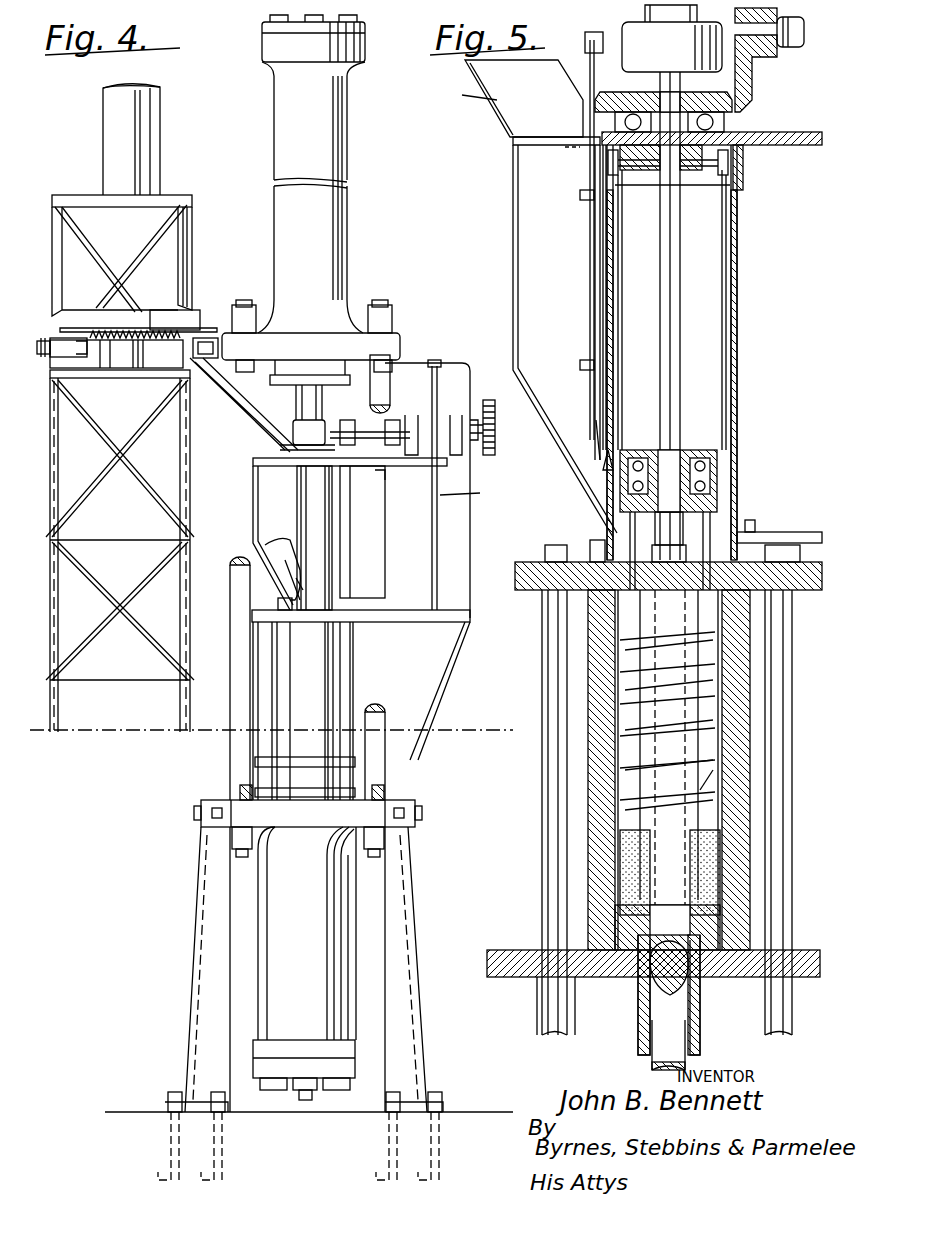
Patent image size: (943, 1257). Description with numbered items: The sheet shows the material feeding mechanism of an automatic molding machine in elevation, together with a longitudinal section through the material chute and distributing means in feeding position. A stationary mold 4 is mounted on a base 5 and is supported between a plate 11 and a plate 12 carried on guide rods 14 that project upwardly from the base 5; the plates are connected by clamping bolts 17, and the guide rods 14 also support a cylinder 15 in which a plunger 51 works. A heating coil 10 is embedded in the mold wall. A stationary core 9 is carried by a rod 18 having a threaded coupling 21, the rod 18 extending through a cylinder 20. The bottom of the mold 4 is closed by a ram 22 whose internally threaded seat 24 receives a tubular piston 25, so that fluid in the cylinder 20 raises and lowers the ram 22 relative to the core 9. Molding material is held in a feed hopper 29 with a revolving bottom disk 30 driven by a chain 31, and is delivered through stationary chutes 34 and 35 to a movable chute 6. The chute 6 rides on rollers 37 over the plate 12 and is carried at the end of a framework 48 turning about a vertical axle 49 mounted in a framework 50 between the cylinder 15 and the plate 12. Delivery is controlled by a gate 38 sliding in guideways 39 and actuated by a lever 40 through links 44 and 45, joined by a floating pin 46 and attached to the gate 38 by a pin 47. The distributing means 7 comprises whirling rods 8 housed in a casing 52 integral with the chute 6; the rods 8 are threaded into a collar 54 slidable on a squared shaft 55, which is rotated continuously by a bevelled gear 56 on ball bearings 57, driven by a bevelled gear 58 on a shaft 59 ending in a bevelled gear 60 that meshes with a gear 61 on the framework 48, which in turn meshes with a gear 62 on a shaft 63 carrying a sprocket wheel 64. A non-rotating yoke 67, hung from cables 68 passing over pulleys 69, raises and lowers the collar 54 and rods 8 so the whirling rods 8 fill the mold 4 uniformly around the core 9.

In FIG. 4, the stationary mold 4 is at (323, 668).
In FIG. 5, the stationary mold 4 is at (603, 748).
In FIG. 4, the base 5 is at (399, 879).
In FIG. 4, the movable chute 6 is at (267, 503).
In FIG. 5, the movable chute 6 is at (528, 263).
In FIG. 5, the distributing means 7 is at (713, 770).
In FIG. 4, the whirling rods 8 is at (300, 575).
In FIG. 5, the whirling rods 8 is at (703, 792).
In FIG. 5, the core 9 is at (657, 682).
In FIG. 5, the heating coil 10 is at (588, 708).
In FIG. 4, the plate 11 is at (315, 757).
In FIG. 5, the plate 11 is at (646, 992).
In FIG. 4, the plate 12 is at (357, 617).
In FIG. 5, the plate 12 is at (533, 580).
In FIG. 4, the guide rods 14 is at (385, 375).
In FIG. 4, the cylinder 15 is at (338, 218).
In FIG. 4, the clamping bolts 17 is at (273, 688).
In FIG. 5, the clamping bolts 17 is at (550, 873).
In FIG. 5, the rod 18 is at (690, 1028).
In FIG. 4, the cylinder 20 is at (304, 963).
In FIG. 5, the threaded coupling 21 is at (640, 992).
In FIG. 5, the ram 22 is at (628, 923).
In FIG. 5, the internally threaded seat 24 is at (700, 960).
In FIG. 5, the tubular piston 25 is at (642, 1028).
In FIG. 4, the feed hopper 29 is at (122, 200).
In FIG. 4, the revolving bottom disk 30 is at (173, 330).
In FIG. 4, the chain 31 is at (57, 359).
In FIG. 4, the stationary chute 34 is at (208, 333).
In FIG. 4, the stationary chute 35 is at (240, 405).
In FIG. 5, the stationary chute 35 is at (462, 92).
In FIG. 4, the rollers 37 is at (277, 602).
In FIG. 5, the rollers 37 is at (600, 538).
In FIG. 4, the gate 38 is at (283, 567).
In FIG. 5, the gate 38 is at (596, 420).
In FIG. 5, the guideways 39 is at (603, 297).
In FIG. 5, the lever 40 is at (597, 40).
In FIG. 5, the link 44 is at (585, 77).
In FIG. 5, the link 45 is at (595, 272).
In FIG. 5, the floating pin 46 is at (580, 195).
In FIG. 5, the pin 47 is at (580, 365).
In FIG. 4, the framework 48 is at (387, 493).
In FIG. 5, the framework 48 is at (795, 127).
In FIG. 4, the vertical axle 49 is at (475, 499).
In FIG. 4, the framework 50 is at (470, 525).
In FIG. 4, the plunger 51 is at (288, 360).
In FIG. 5, the plunger 51 is at (672, 38).
In FIG. 4, the casing 52 is at (325, 565).
In FIG. 5, the casing 52 is at (737, 242).
In FIG. 5, the collar 54 is at (733, 493).
In FIG. 5, the squared shaft 55 is at (673, 292).
In FIG. 4, the bevelled gear 56 is at (272, 448).
In FIG. 5, the bevelled gear 56 is at (668, 80).
In FIG. 5, the ball bearings 57 is at (669, 103).
In FIG. 4, the bevelled gear 58 is at (300, 417).
In FIG. 5, the bevelled gear 58 is at (748, 83).
In FIG. 4, the shaft 59 is at (376, 428).
In FIG. 5, the shaft 59 is at (792, 47).
In FIG. 4, the bevelled gear 60 is at (411, 413).
In FIG. 4, the gear 61 is at (427, 473).
In FIG. 4, the gear 62 is at (456, 413).
In FIG. 4, the shaft 63 is at (500, 430).
In FIG. 4, the sprocket wheel 64 is at (493, 422).
In FIG. 5, the yoke 67 is at (603, 478).
In FIG. 5, the cables 68 is at (720, 348).
In FIG. 5, the pulleys 69 is at (608, 168).